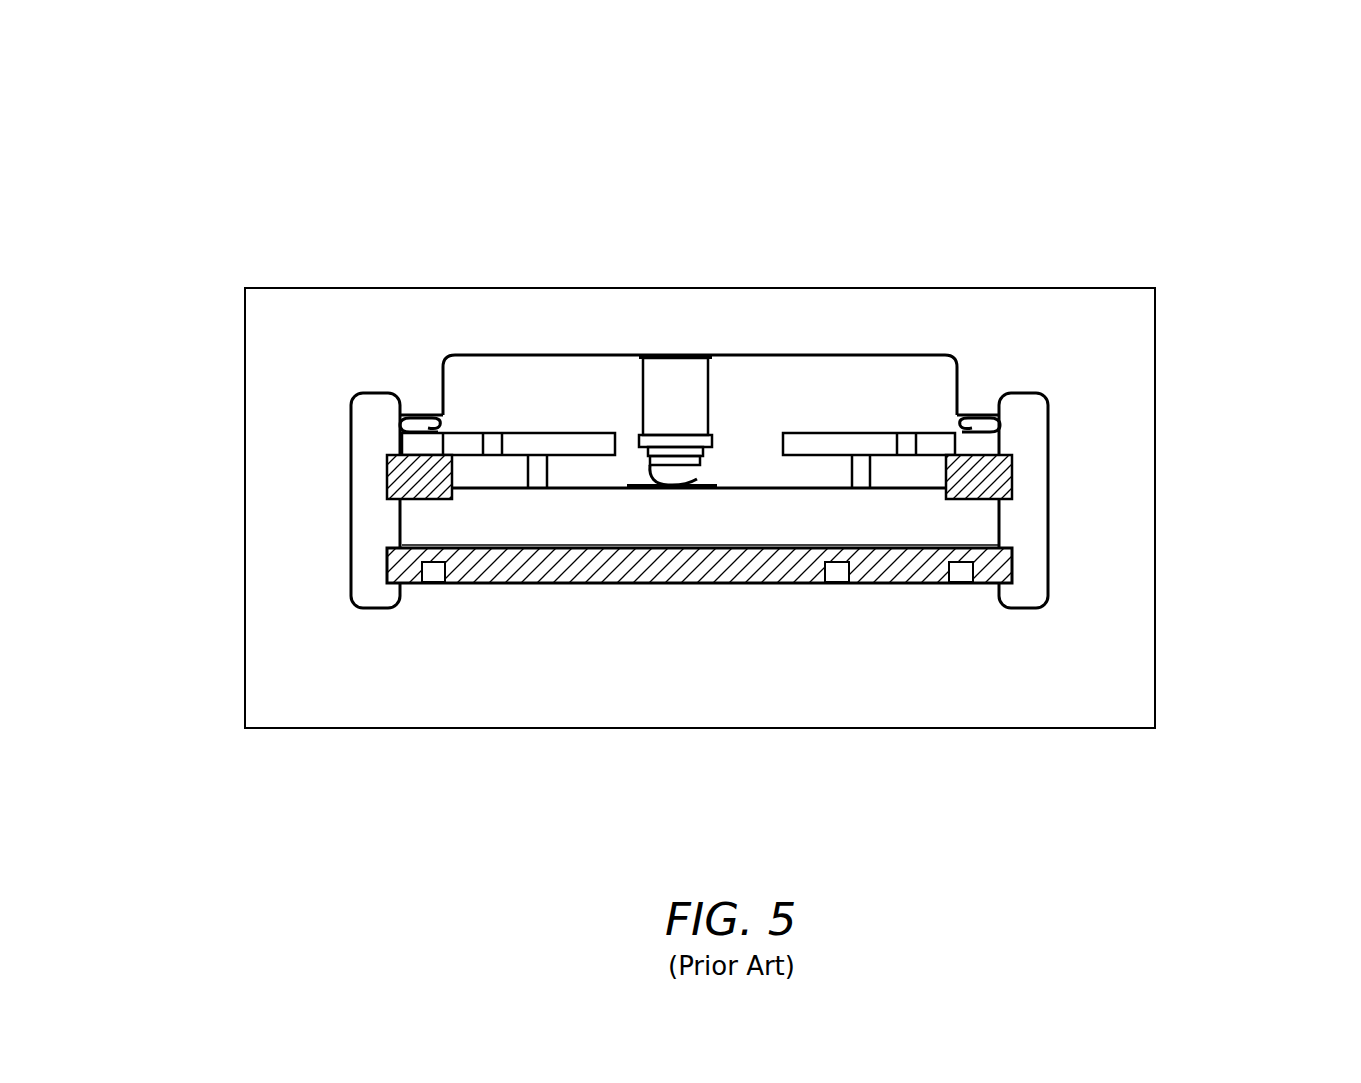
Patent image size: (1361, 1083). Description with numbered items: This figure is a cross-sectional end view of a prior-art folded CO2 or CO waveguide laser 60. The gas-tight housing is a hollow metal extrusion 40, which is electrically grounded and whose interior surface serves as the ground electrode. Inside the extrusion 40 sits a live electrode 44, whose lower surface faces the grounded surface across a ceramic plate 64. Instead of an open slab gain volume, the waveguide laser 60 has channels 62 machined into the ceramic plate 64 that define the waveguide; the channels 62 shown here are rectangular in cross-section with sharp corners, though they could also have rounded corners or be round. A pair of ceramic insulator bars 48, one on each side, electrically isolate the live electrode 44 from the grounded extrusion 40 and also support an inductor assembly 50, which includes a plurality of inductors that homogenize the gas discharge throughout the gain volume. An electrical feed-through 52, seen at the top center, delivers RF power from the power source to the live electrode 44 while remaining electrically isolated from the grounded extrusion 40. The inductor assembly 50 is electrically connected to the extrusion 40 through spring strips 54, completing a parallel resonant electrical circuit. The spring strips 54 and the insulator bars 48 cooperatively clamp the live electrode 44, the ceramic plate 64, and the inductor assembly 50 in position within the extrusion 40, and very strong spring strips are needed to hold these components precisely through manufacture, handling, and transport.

The extrusion 40 is at (1130, 655).
The live electrode 44 is at (753, 495).
The ceramic insulator bars 48 is at (395, 475).
The inductor assembly 50 is at (493, 440).
The electrical feed-through 52 is at (665, 360).
The spring strips 54 is at (418, 430).
The waveguide laser 60 is at (1195, 163).
The channels 62 is at (432, 583).
The ceramic plate 64 is at (688, 573).